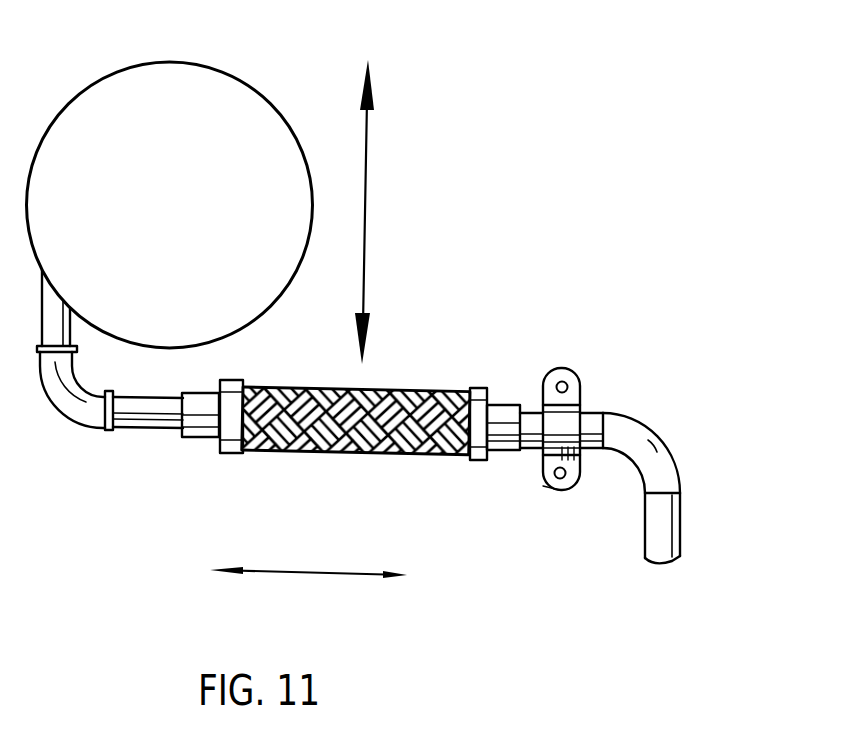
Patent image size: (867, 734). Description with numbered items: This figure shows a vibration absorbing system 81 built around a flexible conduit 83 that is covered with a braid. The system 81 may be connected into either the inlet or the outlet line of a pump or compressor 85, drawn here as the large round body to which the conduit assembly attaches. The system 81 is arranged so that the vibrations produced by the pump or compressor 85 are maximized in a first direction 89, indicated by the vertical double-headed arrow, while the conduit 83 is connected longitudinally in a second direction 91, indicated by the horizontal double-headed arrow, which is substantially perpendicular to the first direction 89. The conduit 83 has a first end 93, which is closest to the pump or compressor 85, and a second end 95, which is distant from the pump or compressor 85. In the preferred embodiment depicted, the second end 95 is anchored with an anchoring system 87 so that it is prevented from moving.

The vibration absorbing system 81 is at (618, 363).
The flexible conduit 83 is at (459, 364).
The pump or compressor 85 is at (168, 57).
The anchoring system 87 is at (536, 478).
The first direction 89 is at (430, 112).
The second direction 91 is at (307, 570).
The first end 93 is at (189, 381).
The second end 95 is at (510, 388).